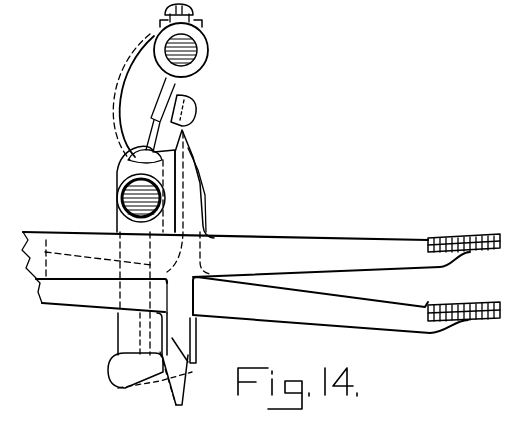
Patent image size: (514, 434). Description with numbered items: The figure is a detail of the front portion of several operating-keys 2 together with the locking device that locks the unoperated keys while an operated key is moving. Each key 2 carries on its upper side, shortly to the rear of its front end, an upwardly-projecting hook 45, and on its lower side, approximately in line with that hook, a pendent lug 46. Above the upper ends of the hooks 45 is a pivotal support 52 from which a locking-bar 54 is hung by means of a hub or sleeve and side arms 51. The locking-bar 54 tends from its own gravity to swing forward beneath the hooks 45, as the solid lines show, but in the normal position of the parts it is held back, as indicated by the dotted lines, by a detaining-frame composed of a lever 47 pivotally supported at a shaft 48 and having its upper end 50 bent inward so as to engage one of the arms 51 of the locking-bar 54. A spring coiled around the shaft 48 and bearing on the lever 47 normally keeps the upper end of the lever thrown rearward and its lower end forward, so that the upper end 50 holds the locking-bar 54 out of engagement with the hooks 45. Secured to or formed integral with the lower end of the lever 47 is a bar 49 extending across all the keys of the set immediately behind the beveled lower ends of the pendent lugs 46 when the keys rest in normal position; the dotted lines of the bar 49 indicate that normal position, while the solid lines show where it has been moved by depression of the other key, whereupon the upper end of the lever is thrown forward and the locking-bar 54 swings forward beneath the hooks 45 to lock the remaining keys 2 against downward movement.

The operating-key 2 is at (261, 282).
The hook 45 is at (192, 153).
The pendent lug 46 is at (203, 382).
The lever 47 is at (140, 334).
The pivotal support 48 is at (118, 198).
The bar 49 is at (150, 370).
The upper end of lever 50 is at (196, 110).
The side arms 51 is at (144, 97).
The pivotal support 52 is at (208, 51).
The locking-bar 54 is at (142, 157).